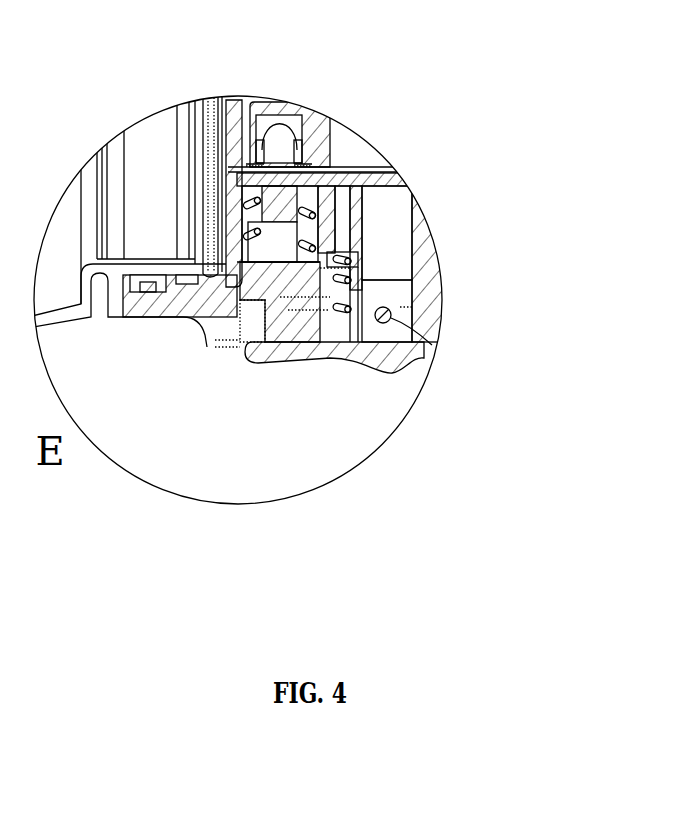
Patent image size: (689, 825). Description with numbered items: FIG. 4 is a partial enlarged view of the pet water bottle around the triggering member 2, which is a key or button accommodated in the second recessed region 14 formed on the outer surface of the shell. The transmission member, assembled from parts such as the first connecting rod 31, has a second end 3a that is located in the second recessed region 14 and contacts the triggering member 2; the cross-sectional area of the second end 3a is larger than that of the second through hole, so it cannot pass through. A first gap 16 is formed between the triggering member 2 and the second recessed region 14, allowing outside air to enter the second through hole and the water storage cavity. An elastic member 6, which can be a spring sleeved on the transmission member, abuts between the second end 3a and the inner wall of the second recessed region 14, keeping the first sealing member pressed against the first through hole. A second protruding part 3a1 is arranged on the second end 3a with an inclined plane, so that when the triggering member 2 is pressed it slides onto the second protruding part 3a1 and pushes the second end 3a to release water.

The first connecting rod 31 is at (280, 132).
The elastic member 6 is at (332, 165).
The second recessed region 14 is at (388, 232).
The second end 3a is at (390, 373).
The triggering member 2 is at (303, 358).
The first gap 16 is at (212, 313).
The second protruding part 3a1 is at (213, 347).